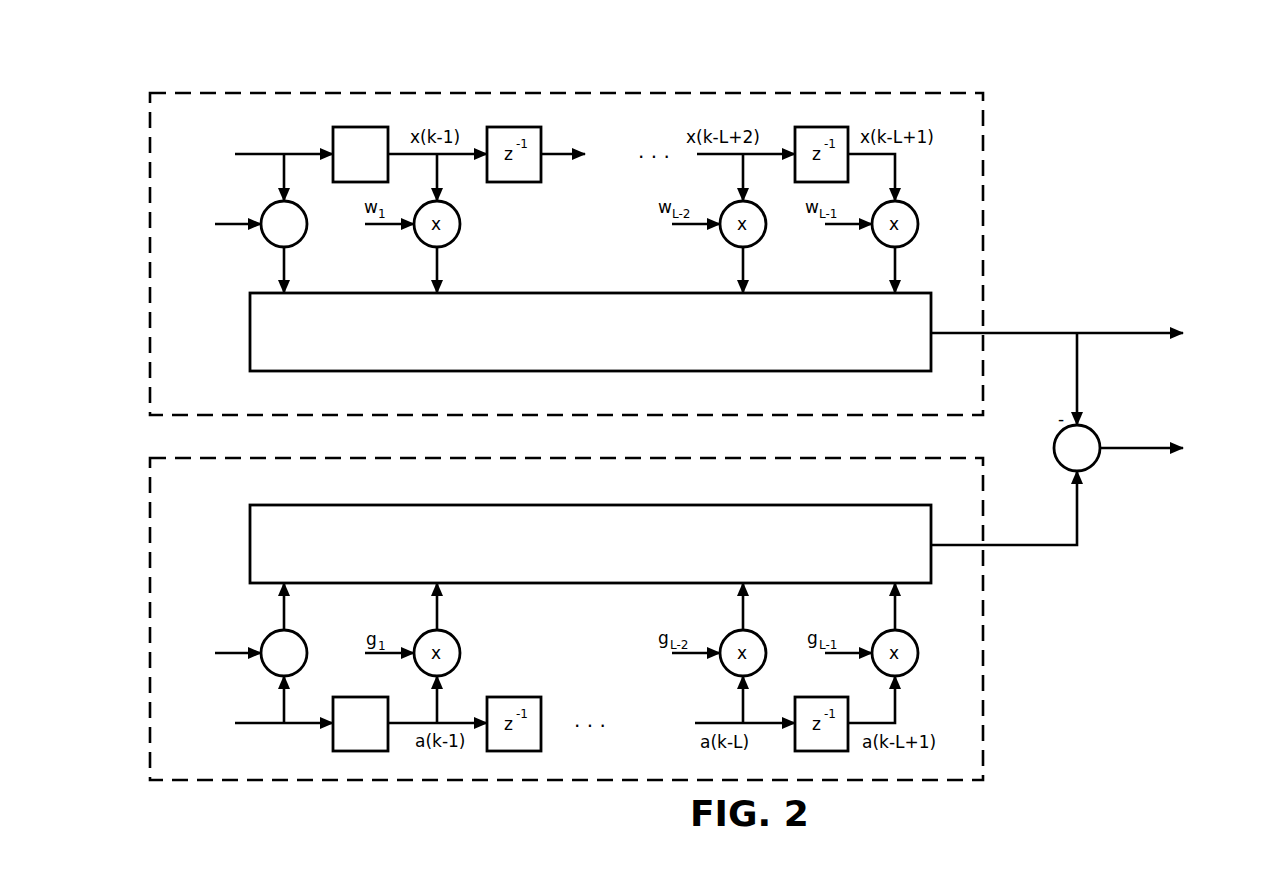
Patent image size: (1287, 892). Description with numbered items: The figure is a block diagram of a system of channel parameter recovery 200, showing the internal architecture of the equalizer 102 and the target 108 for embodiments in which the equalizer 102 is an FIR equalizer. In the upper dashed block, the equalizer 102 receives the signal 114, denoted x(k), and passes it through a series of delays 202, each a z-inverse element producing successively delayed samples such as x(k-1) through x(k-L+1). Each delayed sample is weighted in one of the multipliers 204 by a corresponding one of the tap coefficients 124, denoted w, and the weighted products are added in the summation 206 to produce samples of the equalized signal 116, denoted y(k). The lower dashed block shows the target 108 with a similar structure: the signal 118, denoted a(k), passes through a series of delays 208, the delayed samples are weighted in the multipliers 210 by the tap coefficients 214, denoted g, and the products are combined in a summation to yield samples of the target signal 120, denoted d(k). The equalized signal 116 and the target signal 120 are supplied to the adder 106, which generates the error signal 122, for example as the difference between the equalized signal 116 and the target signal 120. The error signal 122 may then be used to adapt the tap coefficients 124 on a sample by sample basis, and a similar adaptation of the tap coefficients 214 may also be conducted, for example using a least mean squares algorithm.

The system of channel parameter recovery 200 is at (1163, 78).
The equalizer 102 is at (983, 93).
The target 108 is at (983, 762).
The signal 114 is at (250, 124).
The tap coefficients 124 is at (217, 198).
The delays 202 is at (358, 127).
The summation 206 is at (300, 241).
The multipliers 204 is at (590, 332).
The multipliers 210 is at (300, 637).
The delays 208 is at (336, 746).
The tap coefficients 214 is at (218, 626).
The signal 118 is at (240, 750).
The equalized signal 116 is at (1100, 312).
The error signal 122 is at (1160, 417).
The adder 106 is at (1090, 466).
The target signal 120 is at (1042, 576).